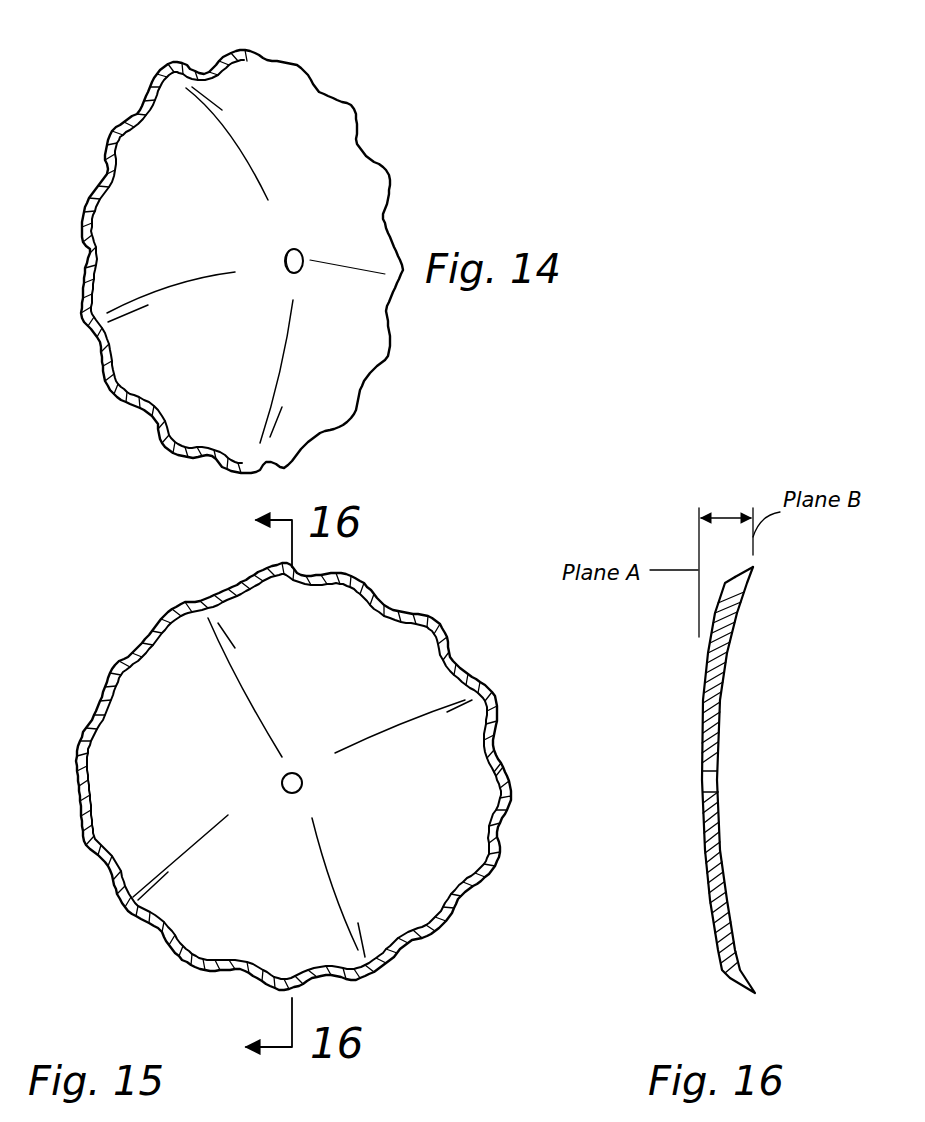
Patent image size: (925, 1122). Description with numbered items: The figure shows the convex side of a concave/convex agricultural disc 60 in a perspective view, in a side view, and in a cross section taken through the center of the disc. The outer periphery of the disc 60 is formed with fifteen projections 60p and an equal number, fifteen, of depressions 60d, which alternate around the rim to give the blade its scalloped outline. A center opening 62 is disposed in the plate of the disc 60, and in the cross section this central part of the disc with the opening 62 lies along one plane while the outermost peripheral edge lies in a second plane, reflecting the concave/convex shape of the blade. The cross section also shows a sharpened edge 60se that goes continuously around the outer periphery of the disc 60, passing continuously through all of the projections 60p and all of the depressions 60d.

In FIG. 14, the concave/convex agricultural disc 60 is at (418, 145).
In FIG. 15, the concave/convex agricultural disc 60 is at (410, 576).
In FIG. 16, the concave/convex agricultural disc 60 is at (742, 686).
In FIG. 14, the depressions 60d is at (320, 92).
In FIG. 15, the depressions 60d is at (95, 713).
In FIG. 14, the projections 60p is at (353, 107).
In FIG. 15, the projections 60p is at (130, 657).
In FIG. 16, the sharpened edge 60se is at (737, 573).
In FIG. 14, the center opening 62 is at (302, 254).
In FIG. 15, the center opening 62 is at (302, 785).
In FIG. 16, the center opening 62 is at (717, 778).